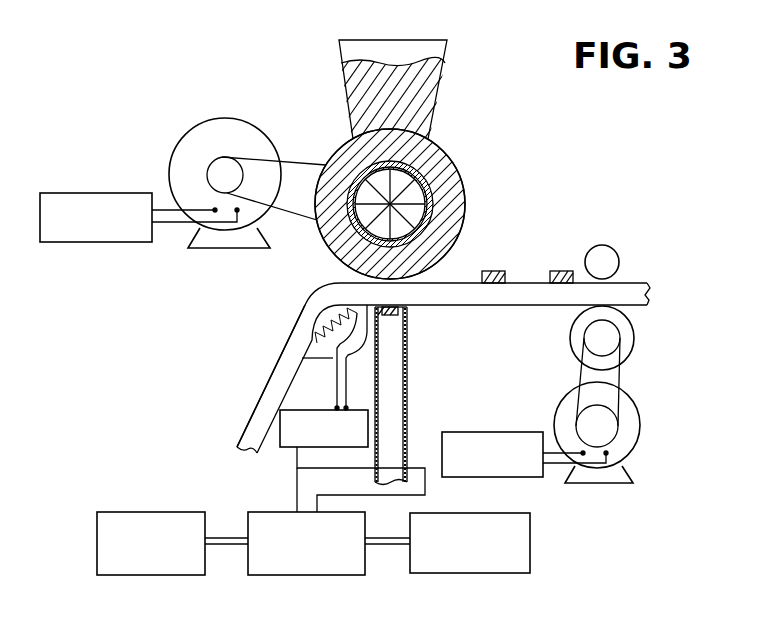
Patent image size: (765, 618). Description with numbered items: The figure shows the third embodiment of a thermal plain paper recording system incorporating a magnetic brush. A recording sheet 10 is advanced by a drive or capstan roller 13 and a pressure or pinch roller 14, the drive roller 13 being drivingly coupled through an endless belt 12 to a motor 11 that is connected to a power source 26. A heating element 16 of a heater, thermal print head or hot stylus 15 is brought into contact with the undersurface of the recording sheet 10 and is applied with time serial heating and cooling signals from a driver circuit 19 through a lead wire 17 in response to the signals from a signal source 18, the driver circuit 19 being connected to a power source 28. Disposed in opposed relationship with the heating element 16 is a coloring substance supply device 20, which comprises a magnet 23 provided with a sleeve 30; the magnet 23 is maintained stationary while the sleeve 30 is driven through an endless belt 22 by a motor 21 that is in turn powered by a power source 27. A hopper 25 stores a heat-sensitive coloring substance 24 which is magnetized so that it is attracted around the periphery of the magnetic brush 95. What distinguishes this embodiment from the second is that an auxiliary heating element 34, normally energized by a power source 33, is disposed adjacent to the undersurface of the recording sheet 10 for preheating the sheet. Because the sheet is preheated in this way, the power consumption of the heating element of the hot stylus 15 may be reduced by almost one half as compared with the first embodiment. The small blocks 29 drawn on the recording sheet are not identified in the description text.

The recording sheet 10 is at (465, 305).
The motor 11 is at (625, 415).
The endless belt 12 is at (620, 377).
The drive roller 13 is at (625, 332).
The pressure roller 14 is at (607, 250).
The hot stylus 15 is at (406, 395).
The heating element 16 is at (390, 318).
The lead wire 17 is at (375, 385).
The signal source 18 is at (530, 535).
The driver circuit 19 is at (325, 575).
The coloring substance supply device 20 is at (388, 200).
The motor 21 is at (222, 117).
The endless belt 22 is at (300, 162).
The magnet 23 is at (420, 212).
The heat-sensitive coloring substance 24 is at (410, 66).
The hopper 25 is at (440, 95).
The power source 26 is at (512, 432).
The power source 27 is at (107, 193).
The power source 28 is at (155, 512).
The blocks 29 is at (500, 271).
The sleeve 30 is at (415, 165).
The power source 33 is at (297, 450).
The auxiliary heating element 34 is at (323, 320).
The magnetic brush 95 is at (337, 232).